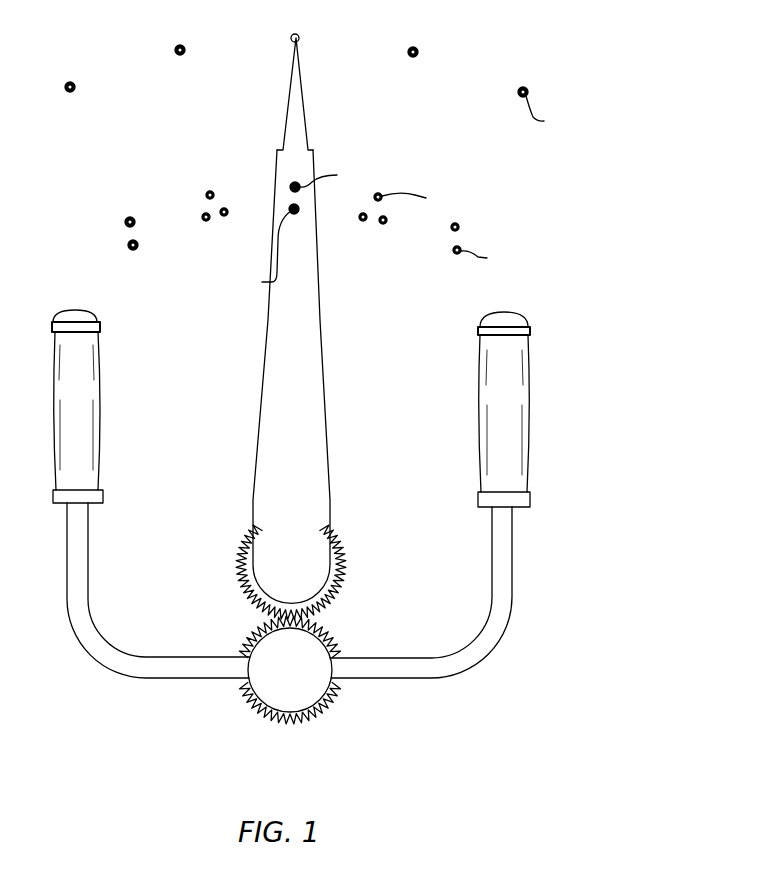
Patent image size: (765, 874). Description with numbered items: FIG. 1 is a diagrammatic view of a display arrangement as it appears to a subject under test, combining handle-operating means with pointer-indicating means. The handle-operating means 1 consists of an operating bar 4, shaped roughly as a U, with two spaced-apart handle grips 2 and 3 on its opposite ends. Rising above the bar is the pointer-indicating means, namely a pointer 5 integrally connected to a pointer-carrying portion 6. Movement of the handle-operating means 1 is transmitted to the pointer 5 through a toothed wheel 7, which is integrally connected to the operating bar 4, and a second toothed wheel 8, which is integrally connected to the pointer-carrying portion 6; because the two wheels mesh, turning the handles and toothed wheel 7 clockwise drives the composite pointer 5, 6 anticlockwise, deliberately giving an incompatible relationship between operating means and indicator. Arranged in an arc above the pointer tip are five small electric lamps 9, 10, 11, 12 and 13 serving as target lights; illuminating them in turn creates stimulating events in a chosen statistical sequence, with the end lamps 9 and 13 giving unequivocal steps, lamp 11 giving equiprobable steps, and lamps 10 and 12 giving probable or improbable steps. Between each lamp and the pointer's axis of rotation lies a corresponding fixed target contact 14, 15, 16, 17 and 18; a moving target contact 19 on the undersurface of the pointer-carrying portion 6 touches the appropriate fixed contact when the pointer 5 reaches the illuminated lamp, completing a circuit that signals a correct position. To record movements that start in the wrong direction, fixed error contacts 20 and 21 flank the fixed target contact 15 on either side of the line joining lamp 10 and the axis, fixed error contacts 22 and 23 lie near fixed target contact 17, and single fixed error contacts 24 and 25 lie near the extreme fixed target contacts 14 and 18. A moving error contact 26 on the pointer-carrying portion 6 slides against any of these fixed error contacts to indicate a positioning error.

The handle-operating means 1 is at (515, 592).
The handle grip 2 is at (88, 360).
The handle grip 3 is at (512, 358).
The operating bar 4 is at (163, 668).
The pointer 5 is at (298, 86).
The pointer-carrying portion 6 is at (310, 308).
The toothed wheel 7 is at (331, 699).
The second toothed wheel 8 is at (345, 556).
The electric lamp 9 is at (71, 82).
The electric lamp 10 is at (183, 45).
The electric lamp 11 is at (299, 36).
The electric lamp 12 is at (417, 48).
The electric lamp 13 is at (527, 88).
The fixed target contact 14 is at (129, 216).
The fixed target contact 15 is at (209, 190).
The fixed target contact 16 is at (301, 183).
The fixed target contact 17 is at (382, 199).
The fixed target contact 18 is at (460, 226).
The moving target contact 19 is at (312, 195).
The fixed error contact 20 is at (206, 221).
The fixed error contact 21 is at (226, 208).
The fixed error contact 22 is at (360, 221).
The fixed error contact 23 is at (385, 225).
The fixed error contact 24 is at (128, 246).
The fixed error contact 25 is at (455, 253).
The moving error contact 26 is at (287, 212).